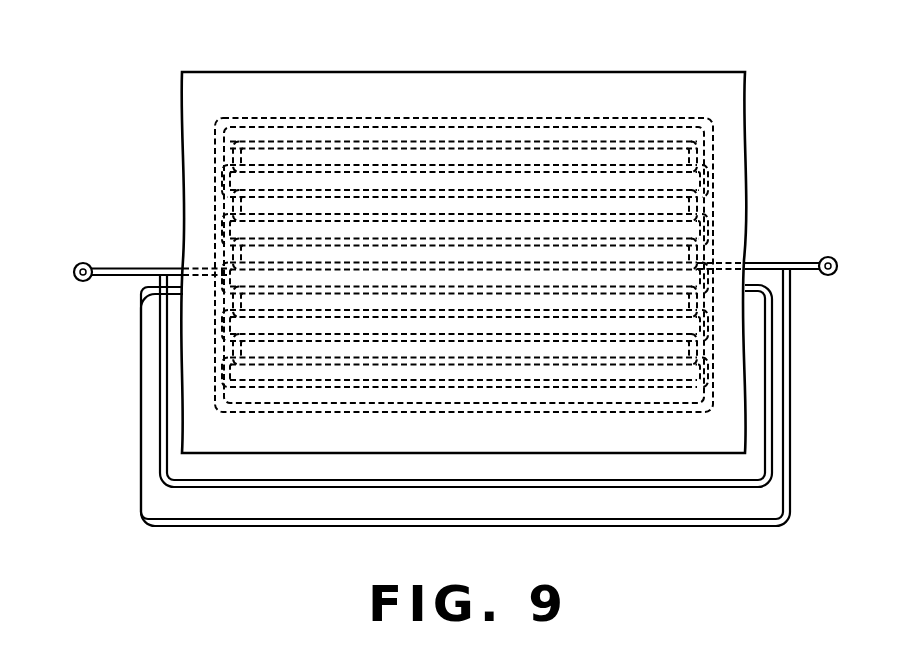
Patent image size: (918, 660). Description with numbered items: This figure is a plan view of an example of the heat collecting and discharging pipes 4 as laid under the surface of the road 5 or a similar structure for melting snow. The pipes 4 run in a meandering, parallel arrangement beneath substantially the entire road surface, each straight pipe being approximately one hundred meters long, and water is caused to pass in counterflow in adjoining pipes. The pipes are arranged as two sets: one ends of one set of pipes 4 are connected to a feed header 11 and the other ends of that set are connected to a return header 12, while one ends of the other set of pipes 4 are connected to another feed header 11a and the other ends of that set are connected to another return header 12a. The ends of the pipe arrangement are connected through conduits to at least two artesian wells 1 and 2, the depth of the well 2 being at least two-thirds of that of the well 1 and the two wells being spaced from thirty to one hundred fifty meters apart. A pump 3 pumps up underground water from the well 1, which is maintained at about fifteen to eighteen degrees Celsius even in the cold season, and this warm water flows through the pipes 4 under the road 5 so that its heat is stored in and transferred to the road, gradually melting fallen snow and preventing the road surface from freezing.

The artesian well 1 is at (83, 262).
The artesian well 2 is at (833, 274).
The pump 3 is at (83, 281).
The heat collecting and discharging pipes 4 is at (375, 140).
The road 5 is at (569, 86).
The feed header 11 is at (215, 190).
The return header 12 is at (713, 190).
The feed header 11a is at (710, 205).
The return header 12a is at (215, 235).